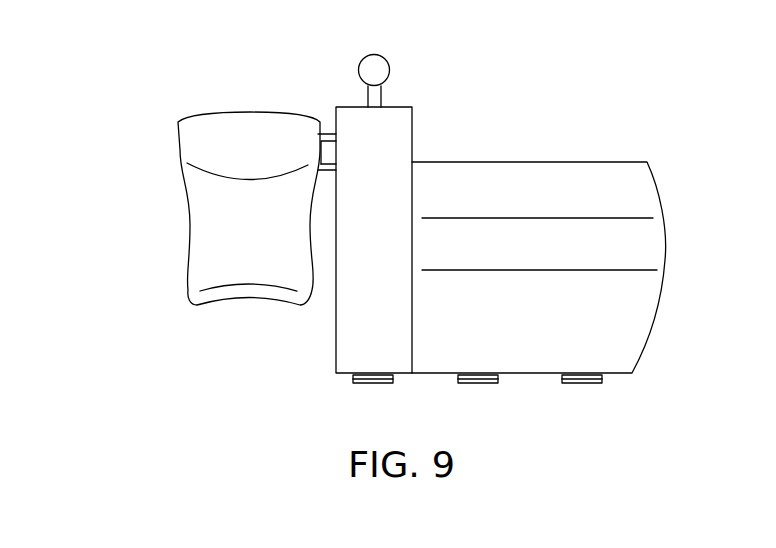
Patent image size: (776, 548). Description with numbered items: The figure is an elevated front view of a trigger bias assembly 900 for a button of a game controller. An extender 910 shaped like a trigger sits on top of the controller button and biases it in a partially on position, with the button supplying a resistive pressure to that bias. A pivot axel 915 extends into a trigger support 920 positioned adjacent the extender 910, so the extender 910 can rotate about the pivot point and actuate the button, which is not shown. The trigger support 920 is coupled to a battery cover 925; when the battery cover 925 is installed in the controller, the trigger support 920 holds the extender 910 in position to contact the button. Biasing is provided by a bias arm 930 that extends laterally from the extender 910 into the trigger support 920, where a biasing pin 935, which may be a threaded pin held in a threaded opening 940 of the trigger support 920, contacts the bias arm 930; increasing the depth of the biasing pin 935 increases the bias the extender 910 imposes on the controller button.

The trigger bias assembly 900 is at (562, 109).
The extender 910 is at (190, 217).
The pivot axel 915 is at (334, 134).
The trigger support 920 is at (412, 137).
The battery cover 925 is at (665, 242).
The bias arm 930 is at (332, 171).
The biasing pin 935 is at (359, 71).
The threaded opening 940 is at (383, 104).